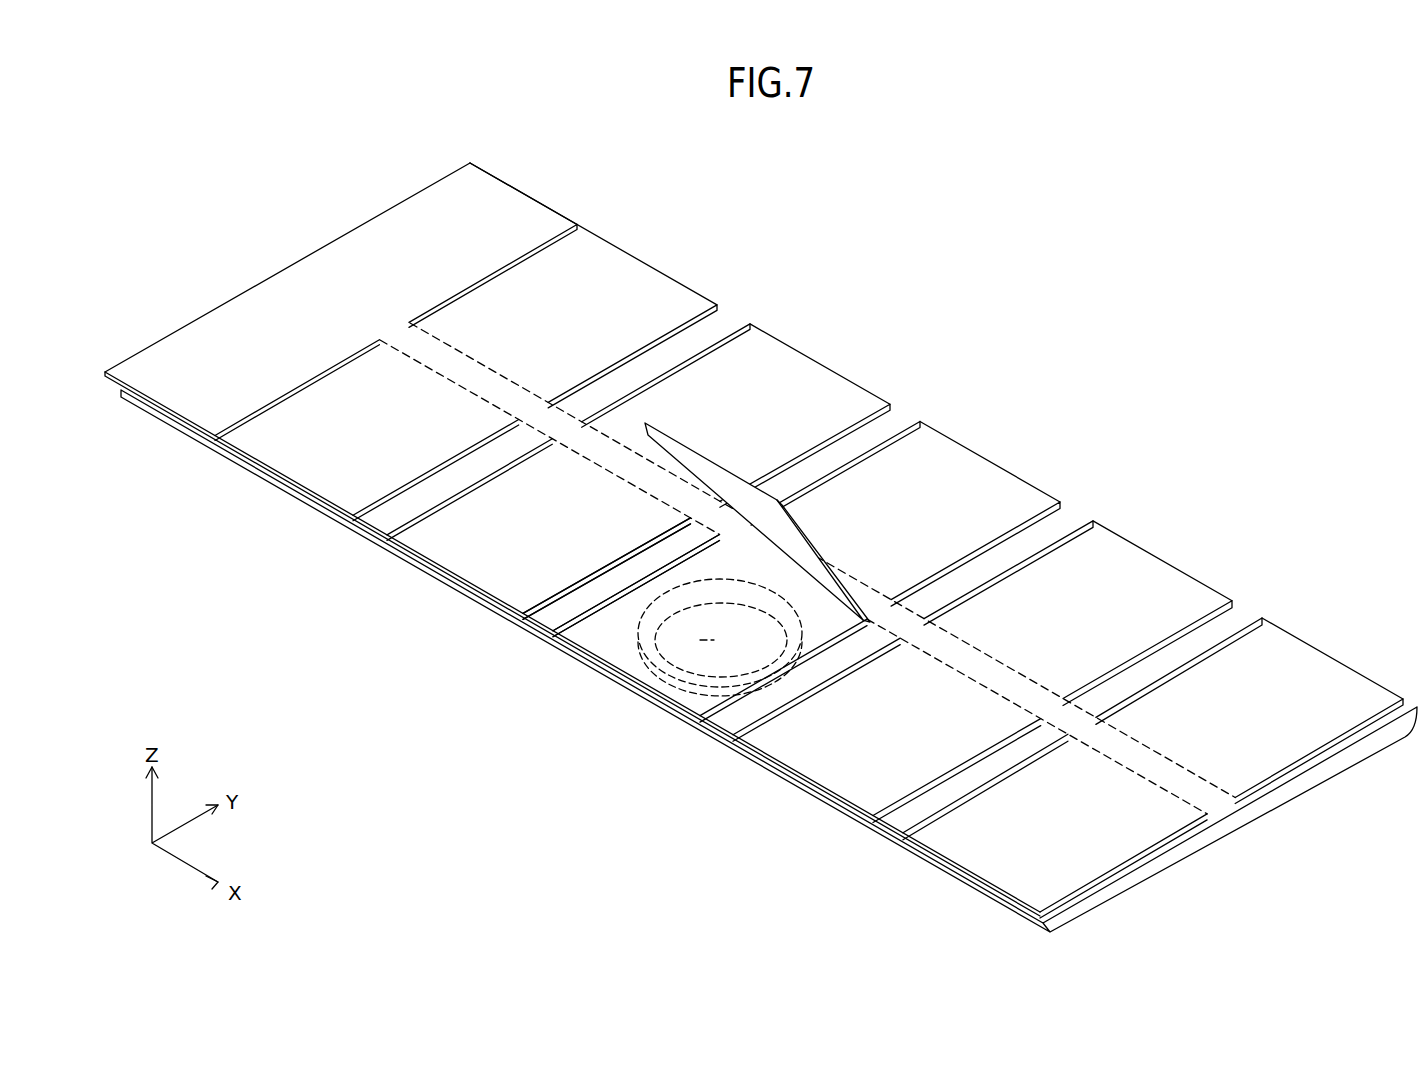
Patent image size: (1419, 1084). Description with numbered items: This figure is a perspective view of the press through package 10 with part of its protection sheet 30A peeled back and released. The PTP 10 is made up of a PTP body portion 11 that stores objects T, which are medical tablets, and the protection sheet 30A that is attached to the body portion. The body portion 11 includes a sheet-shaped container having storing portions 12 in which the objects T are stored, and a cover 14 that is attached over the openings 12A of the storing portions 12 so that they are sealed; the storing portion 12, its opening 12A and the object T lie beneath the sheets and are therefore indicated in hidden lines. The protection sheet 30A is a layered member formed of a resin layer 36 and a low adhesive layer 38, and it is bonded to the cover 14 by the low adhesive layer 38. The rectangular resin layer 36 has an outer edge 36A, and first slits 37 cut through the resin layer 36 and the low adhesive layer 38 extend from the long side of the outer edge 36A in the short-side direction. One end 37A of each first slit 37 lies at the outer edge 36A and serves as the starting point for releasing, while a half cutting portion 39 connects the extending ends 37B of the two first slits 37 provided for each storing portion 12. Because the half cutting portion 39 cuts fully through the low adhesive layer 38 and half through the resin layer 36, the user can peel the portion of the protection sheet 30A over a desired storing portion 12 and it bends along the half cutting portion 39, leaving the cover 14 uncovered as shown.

The press through package 10 is at (970, 131).
The PTP body portion 11 is at (178, 432).
The storing portion 12 is at (650, 598).
The opening 12A is at (661, 606).
The cover 14 is at (612, 638).
The protection sheet 30A is at (433, 183).
The resin layer 36 is at (225, 318).
The outer edge 36A is at (107, 380).
The first slit 37 is at (588, 612).
The one end 37A is at (215, 440).
The extending end 37B is at (380, 337).
The low adhesive layer 38 is at (742, 508).
The half cutting portion 39 is at (473, 390).
The object T is at (707, 640).